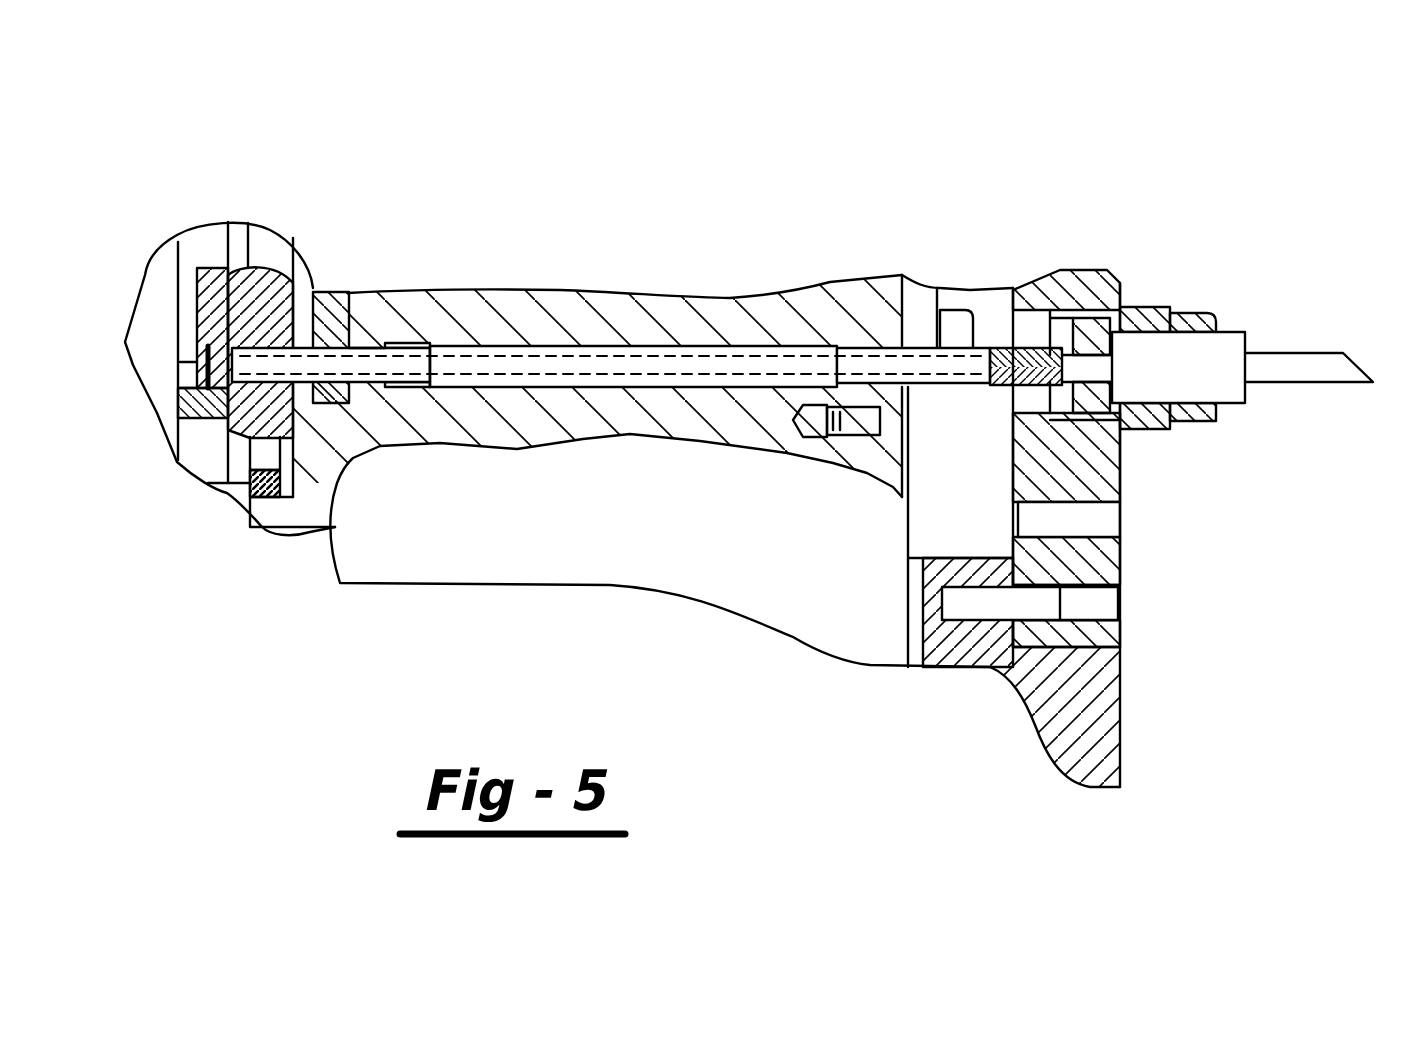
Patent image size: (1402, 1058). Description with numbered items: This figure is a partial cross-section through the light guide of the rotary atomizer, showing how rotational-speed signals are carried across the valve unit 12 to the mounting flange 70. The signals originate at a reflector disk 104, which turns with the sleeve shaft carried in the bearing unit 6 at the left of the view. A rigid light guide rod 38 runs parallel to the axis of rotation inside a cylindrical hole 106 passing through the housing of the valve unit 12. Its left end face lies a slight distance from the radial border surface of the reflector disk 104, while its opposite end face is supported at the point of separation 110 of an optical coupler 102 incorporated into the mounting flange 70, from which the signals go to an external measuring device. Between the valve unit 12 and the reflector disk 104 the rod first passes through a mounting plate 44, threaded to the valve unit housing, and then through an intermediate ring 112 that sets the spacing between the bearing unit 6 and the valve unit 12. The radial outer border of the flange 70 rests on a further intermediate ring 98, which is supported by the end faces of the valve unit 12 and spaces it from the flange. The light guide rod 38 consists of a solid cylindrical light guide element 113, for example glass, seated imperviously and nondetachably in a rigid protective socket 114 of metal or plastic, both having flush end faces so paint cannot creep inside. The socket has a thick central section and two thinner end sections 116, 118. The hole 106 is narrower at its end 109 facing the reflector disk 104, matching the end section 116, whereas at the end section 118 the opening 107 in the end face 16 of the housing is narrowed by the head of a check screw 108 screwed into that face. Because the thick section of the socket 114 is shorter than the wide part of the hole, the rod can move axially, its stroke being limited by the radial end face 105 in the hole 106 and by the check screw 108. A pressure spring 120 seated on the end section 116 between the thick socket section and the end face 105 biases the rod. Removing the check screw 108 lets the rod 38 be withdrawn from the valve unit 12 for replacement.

The bearing unit 6 is at (177, 248).
The reflector disk 104 is at (217, 268).
The intermediate ring 112 is at (263, 268).
The mounting plate 44 is at (333, 292).
The end of the hole 109 is at (370, 342).
The pressure spring 120 is at (432, 342).
The light guide rod 38 is at (637, 335).
The cylindrical hole 106 is at (852, 333).
The opening of the hole 107 is at (903, 347).
The end section of the protective socket 118 is at (982, 348).
The light guide element 113 is at (1033, 348).
The mounting flange 70 is at (1103, 290).
The point of separation 110 is at (1100, 360).
The optical coupler 102 is at (1103, 370).
The intermediate ring 98 is at (1093, 690).
The end face 16 is at (907, 460).
The check screw 108 is at (895, 422).
The valve unit 12 is at (597, 423).
The protective socket 114 is at (460, 387).
The end face of the hole 105 is at (387, 385).
The end section of the protective socket 116 is at (228, 400).